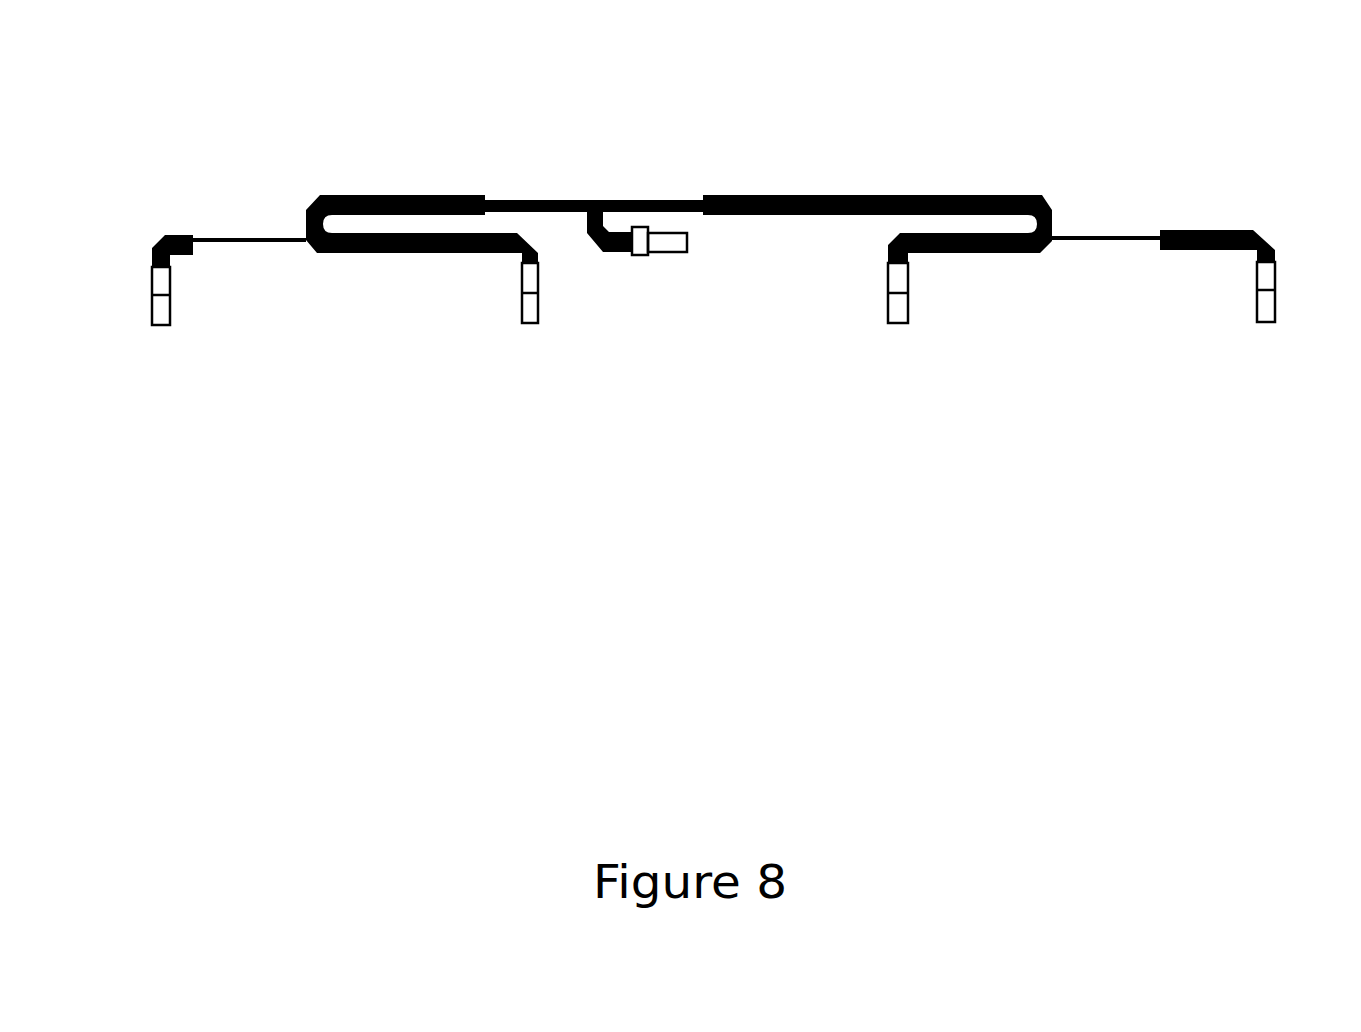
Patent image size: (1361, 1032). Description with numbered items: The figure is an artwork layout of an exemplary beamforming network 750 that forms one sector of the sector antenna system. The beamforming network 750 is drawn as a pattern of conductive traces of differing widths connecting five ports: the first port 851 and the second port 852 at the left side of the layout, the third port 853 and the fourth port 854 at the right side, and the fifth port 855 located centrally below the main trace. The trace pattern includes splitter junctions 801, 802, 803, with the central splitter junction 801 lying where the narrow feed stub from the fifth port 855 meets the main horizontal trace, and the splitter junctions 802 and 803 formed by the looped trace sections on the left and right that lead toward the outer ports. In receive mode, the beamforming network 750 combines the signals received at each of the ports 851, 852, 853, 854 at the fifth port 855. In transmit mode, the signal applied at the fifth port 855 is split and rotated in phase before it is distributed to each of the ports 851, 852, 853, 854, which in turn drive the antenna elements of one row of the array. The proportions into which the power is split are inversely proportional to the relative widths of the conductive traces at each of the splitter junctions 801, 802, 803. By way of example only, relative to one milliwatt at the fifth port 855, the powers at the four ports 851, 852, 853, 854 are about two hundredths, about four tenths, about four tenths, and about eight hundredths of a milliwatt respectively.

The beamforming network 750 is at (303, 108).
The splitter junction 801 is at (597, 200).
The splitter junction 802 is at (315, 253).
The splitter junction 803 is at (1040, 253).
The port 1 851 is at (150, 278).
The port 2 852 is at (548, 272).
The port 3 853 is at (913, 277).
The port 4 854 is at (1282, 270).
The port 5 855 is at (638, 257).